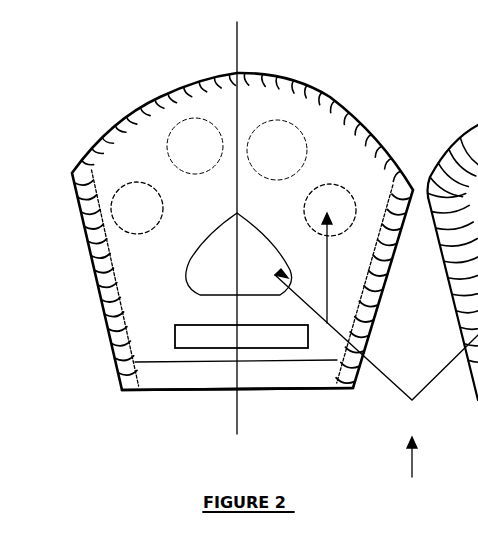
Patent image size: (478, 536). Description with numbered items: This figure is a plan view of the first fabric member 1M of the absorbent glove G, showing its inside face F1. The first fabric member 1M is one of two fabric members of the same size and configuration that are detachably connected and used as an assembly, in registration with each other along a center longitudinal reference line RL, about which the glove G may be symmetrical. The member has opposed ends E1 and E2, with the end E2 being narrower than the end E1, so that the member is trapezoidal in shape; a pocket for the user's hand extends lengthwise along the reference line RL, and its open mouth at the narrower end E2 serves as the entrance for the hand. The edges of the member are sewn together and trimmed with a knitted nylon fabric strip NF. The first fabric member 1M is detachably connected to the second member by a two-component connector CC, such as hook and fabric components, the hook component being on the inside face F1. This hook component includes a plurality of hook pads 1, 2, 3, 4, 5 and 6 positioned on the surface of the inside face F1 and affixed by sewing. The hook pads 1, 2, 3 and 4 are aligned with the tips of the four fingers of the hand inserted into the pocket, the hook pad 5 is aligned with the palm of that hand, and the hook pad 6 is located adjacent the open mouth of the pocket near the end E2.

The hook pad 1 is at (120, 195).
The hook pad 2 is at (189, 142).
The hook pad 3 is at (285, 150).
The hook pad 4 is at (345, 188).
The knitted nylon fabric strip NF is at (328, 112).
The end E1 is at (355, 128).
The end E2 is at (182, 393).
The inside face F1 is at (128, 258).
The first fabric member 1M is at (127, 310).
The hook pad 5 is at (217, 270).
The hook pad 6 is at (287, 340).
The center longitudinal reference line RL is at (240, 410).
The two-component connector CC is at (376, 350).
The glove G is at (410, 473).